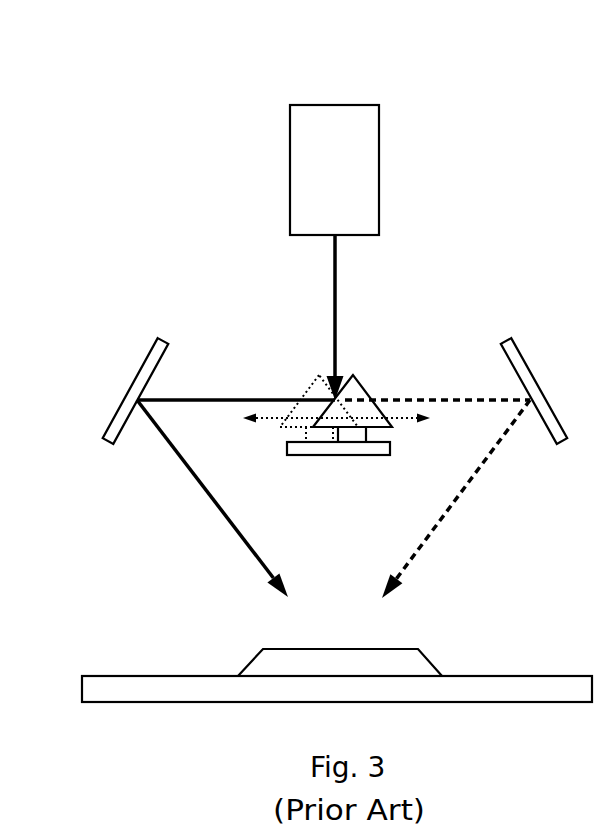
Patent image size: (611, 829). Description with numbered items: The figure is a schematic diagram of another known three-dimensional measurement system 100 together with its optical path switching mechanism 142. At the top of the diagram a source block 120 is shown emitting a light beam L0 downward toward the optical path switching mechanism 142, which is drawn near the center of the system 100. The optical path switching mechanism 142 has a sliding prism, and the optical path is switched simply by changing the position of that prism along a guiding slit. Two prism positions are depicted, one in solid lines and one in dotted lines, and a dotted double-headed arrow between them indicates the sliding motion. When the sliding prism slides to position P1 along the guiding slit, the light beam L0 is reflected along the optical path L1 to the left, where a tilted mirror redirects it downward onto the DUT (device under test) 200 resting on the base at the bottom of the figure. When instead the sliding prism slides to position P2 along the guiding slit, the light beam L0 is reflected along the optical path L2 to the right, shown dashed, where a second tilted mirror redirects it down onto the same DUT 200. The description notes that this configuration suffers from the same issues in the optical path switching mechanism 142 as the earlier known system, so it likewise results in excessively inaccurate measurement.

The three-dimensional measurement system 100 is at (129, 149).
The light source 120 is at (380, 165).
The light beam L0 is at (337, 297).
The optical path L1 is at (198, 399).
The optical path L2 is at (463, 399).
The position P1 is at (366, 393).
The position P2 is at (310, 388).
The optical path switching mechanism 142 is at (335, 455).
The DUT (device under test) 200 is at (428, 653).